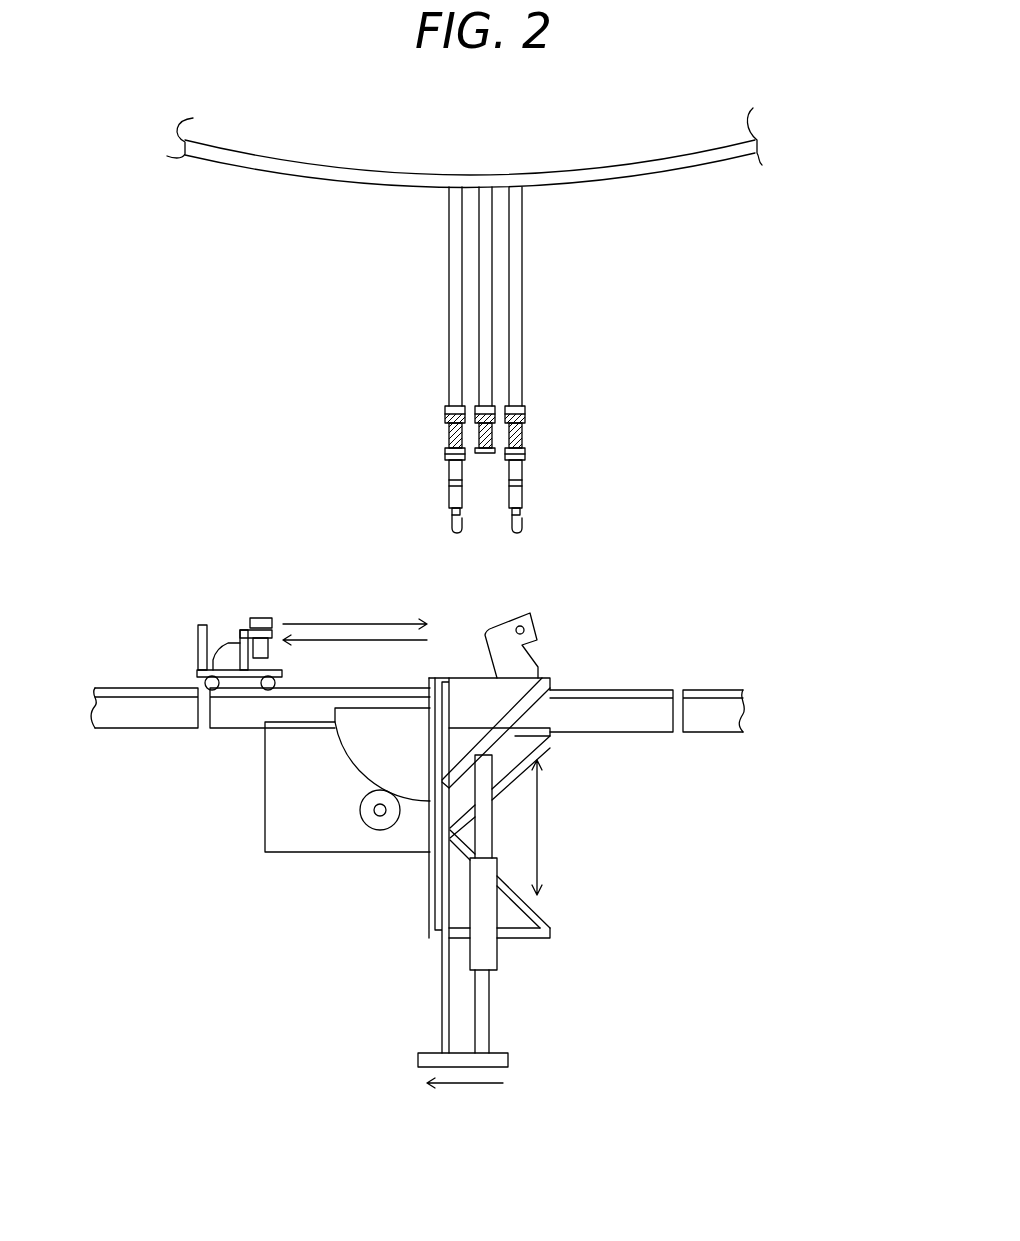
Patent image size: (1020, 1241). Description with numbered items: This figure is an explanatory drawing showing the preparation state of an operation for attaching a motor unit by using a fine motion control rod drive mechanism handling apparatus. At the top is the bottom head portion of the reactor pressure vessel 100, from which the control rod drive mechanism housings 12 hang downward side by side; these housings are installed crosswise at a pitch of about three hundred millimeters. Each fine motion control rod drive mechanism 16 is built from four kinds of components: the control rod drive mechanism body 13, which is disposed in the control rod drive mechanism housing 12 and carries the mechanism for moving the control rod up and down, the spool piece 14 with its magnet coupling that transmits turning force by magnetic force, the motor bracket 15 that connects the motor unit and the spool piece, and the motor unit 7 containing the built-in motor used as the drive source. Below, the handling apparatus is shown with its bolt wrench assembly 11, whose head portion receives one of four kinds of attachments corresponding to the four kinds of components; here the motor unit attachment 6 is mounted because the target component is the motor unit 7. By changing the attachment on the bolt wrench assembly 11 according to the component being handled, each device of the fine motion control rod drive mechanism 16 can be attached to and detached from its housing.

The reactor pressure vessel 100 is at (313, 186).
The control rod drive mechanism housing 12 is at (523, 350).
The control rod drive mechanism body 13 is at (525, 412).
The spool piece 14 is at (523, 437).
The motor bracket 15 is at (525, 452).
The motor unit 7 is at (528, 463).
The fine motion control rod drive mechanism 16 is at (642, 385).
The motor unit attachment 6 is at (258, 618).
The bolt wrench assembly 11 is at (493, 827).